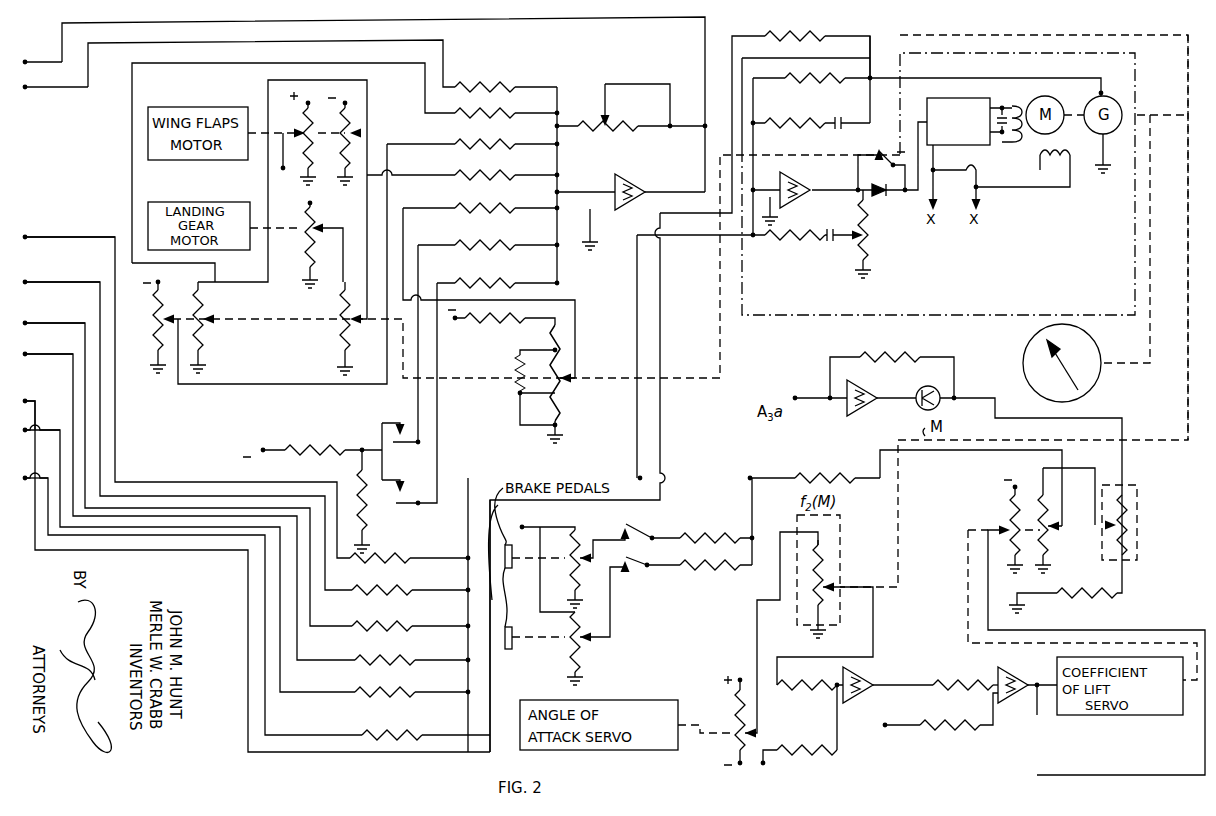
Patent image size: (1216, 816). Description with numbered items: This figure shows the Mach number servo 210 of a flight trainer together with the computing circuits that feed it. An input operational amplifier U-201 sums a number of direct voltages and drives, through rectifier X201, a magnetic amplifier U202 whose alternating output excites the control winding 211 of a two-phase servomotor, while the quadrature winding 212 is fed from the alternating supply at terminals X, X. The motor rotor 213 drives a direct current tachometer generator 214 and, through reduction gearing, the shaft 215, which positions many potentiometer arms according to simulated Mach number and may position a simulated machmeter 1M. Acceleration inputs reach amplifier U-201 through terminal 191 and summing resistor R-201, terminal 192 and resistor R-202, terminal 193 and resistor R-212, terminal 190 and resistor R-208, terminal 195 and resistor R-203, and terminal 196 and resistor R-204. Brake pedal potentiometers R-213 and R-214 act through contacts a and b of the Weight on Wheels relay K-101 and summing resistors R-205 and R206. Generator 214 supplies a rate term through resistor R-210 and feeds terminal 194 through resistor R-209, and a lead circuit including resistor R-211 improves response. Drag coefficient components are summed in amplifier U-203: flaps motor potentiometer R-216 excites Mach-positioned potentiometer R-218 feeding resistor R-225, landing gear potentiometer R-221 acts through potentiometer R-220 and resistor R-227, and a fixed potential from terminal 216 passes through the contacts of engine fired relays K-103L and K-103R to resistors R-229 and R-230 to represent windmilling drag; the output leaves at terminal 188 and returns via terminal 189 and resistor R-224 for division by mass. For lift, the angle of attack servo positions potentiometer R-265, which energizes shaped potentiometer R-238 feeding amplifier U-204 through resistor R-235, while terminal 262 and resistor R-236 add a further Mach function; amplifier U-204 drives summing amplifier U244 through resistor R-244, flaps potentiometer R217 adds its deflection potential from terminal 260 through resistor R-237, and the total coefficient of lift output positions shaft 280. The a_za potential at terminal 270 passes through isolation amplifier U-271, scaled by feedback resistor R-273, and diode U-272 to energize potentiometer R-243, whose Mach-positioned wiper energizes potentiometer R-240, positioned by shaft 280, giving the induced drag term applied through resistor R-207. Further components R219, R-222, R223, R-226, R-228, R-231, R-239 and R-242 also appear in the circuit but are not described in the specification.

The terminal 188 is at (27, 44).
The terminal 189 is at (27, 72).
The terminal 190 is at (23, 237).
The terminal 191 is at (23, 282).
The terminal 192 is at (23, 323).
The terminal 193 is at (23, 354).
The terminal 194 is at (23, 401).
The terminal 195 is at (38, 413).
The terminal 196 is at (27, 482).
The terminal 260 is at (281, 176).
The terminal 262 is at (766, 768).
The terminal 270 is at (787, 388).
The shaft 280 is at (1094, 648).
The Mach number servo 210 is at (1034, 55).
The control winding 211 is at (997, 100).
The quadrature winding 212 is at (1042, 160).
The rotor 213 is at (1058, 96).
The direct current tachometer generator 214 is at (1108, 92).
The shaft 215 is at (1186, 420).
The terminal 216 is at (282, 440).
The simulated machmeter 1M is at (1080, 398).
The summing resistor R-201 is at (404, 596).
The summing resistor R-202 is at (404, 631).
The resistor R-203 is at (407, 698).
The resistor R-204 is at (416, 740).
The summing resistor R-205 is at (686, 520).
The summing resistor R206 is at (688, 576).
The resistor R-207 is at (810, 455).
The resistor R-208 is at (404, 562).
The resistor R-209 is at (832, 20).
The resistor R-210 is at (797, 66).
The resistor R-211 is at (836, 105).
The resistor R-212 is at (407, 665).
The potentiometer R-213 is at (599, 529).
The potentiometer R-214 is at (593, 648).
The potentiometer R-216 is at (355, 104).
The potentiometer R217 is at (291, 142).
The potentiometer R-218 is at (206, 326).
The potentiometer R219 is at (150, 312).
The potentiometer R-220 is at (335, 311).
The potentiometer R-221 is at (318, 208).
The resistor R-222 is at (504, 327).
The potentiometer R223 is at (576, 392).
The resistor R-224 is at (507, 72).
The resistor R-225 is at (509, 100).
The resistor R-226 is at (510, 131).
The resistor R-227 is at (510, 162).
The resistor R-228 is at (510, 196).
The resistor R-229 is at (513, 233).
The resistor R-230 is at (513, 264).
The potentiometer R-231 is at (647, 148).
The summing resistor R-235 is at (778, 694).
The summing resistor R-236 is at (783, 736).
The summing resistor R-237 is at (948, 742).
The functional potentiometer R-238 is at (836, 560).
The potentiometer R-239 is at (1008, 506).
The potentiometer R-240 is at (1066, 520).
The resistor R-242 is at (1064, 588).
The functional potentiometer R-243 is at (1133, 535).
The resistor R-244 is at (932, 668).
The potentiometer R-265 is at (747, 700).
The feedback resistor R-273 is at (903, 334).
The input operational amplifier U-201 is at (788, 168).
The magnetic amplifier U202 is at (1000, 177).
The summing amplifier U-203 is at (641, 181).
The summing amplifier U-204 is at (860, 700).
The summing amplifier U244 is at (1003, 656).
The isolation amplifier U-271 is at (855, 410).
The diode U-272 is at (908, 386).
The rectifier X201 is at (840, 200).
The Weight on Wheels relay K-101 is at (620, 513).
The Left Engine Fired relay K-103L is at (397, 414).
The Right Engine Fired relay K-103R is at (393, 513).